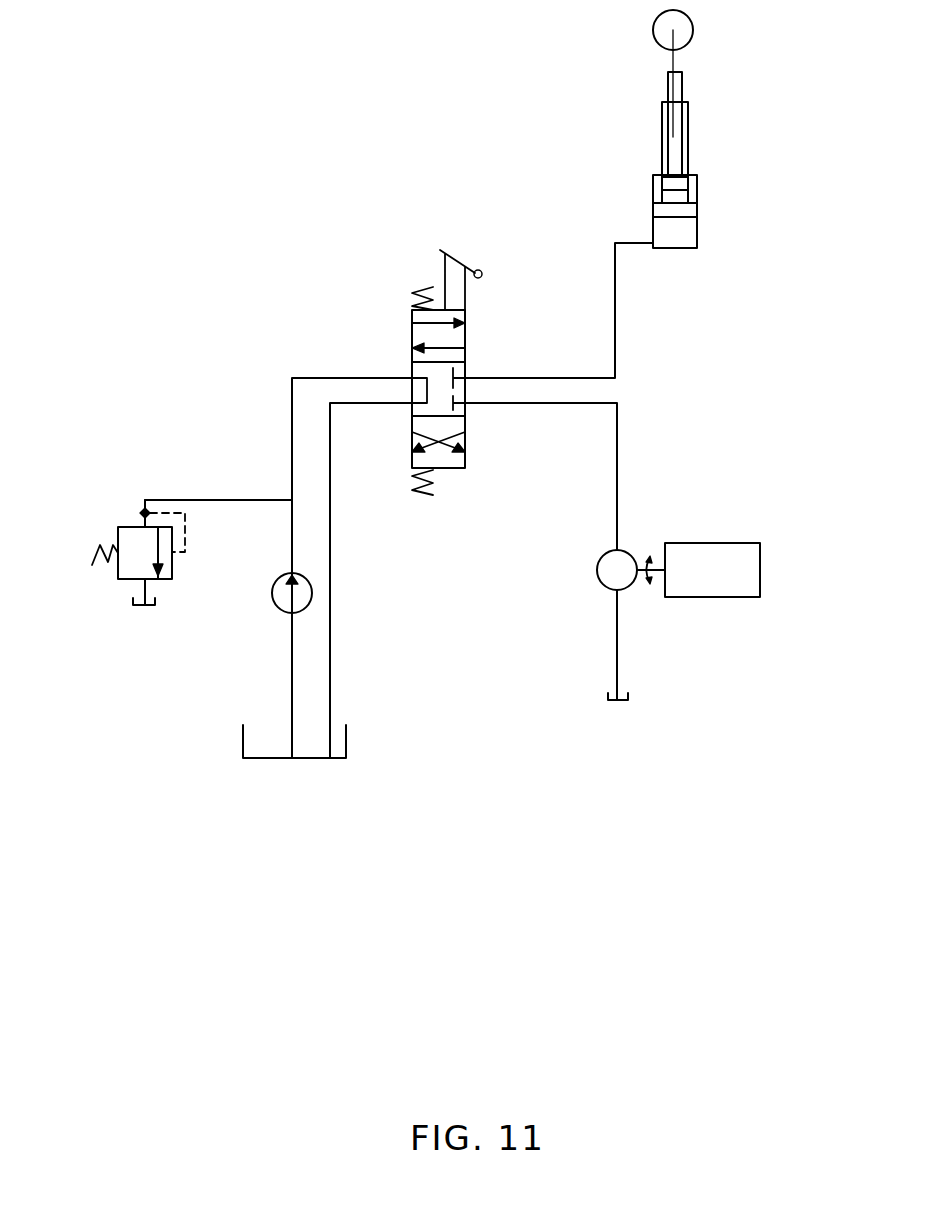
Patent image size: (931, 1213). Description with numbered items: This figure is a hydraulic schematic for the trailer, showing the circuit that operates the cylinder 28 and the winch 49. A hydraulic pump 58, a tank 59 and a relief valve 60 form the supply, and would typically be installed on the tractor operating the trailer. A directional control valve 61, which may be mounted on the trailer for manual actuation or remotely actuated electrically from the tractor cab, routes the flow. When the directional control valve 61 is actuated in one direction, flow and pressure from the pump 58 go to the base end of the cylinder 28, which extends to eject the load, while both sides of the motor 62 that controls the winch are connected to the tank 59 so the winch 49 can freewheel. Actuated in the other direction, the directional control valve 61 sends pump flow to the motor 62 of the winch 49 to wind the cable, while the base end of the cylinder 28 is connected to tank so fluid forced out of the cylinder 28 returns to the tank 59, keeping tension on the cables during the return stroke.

The cylinder 28 is at (697, 192).
The directional control valve 61 is at (468, 332).
The relief valve 60 is at (117, 577).
The hydraulic pump 58 is at (272, 597).
The tank 59 is at (243, 745).
The motor 62 is at (598, 582).
The winch 49 is at (713, 543).